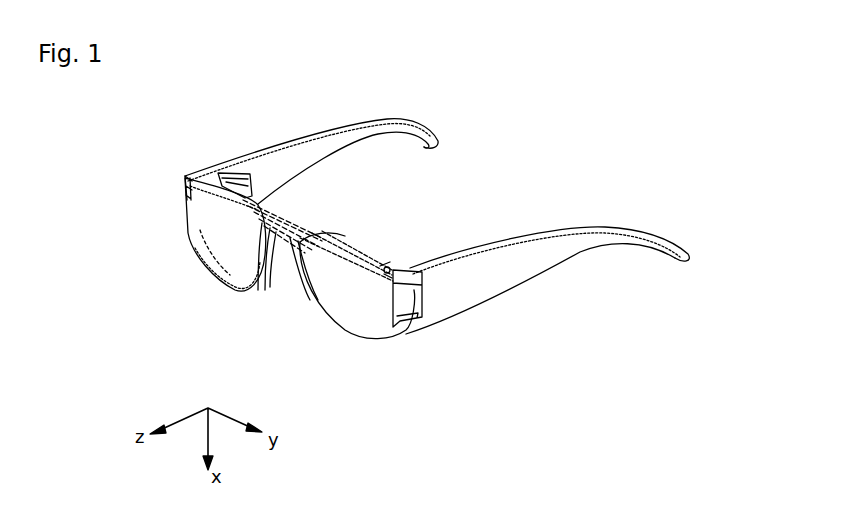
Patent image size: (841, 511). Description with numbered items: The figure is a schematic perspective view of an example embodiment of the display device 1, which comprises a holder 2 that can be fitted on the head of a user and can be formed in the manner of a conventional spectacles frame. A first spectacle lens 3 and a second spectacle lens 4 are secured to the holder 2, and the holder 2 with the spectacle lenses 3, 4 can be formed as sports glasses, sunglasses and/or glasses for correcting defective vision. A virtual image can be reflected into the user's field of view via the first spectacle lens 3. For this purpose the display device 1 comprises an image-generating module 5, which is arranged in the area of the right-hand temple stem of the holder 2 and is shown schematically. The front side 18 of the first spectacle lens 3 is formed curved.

The display device 1 is at (250, 337).
The holder 2 is at (334, 122).
The first spectacle lens 3 is at (236, 287).
The second spectacle lens 4 is at (337, 333).
The image-generating module 5 is at (240, 172).
The front side 18 is at (214, 259).